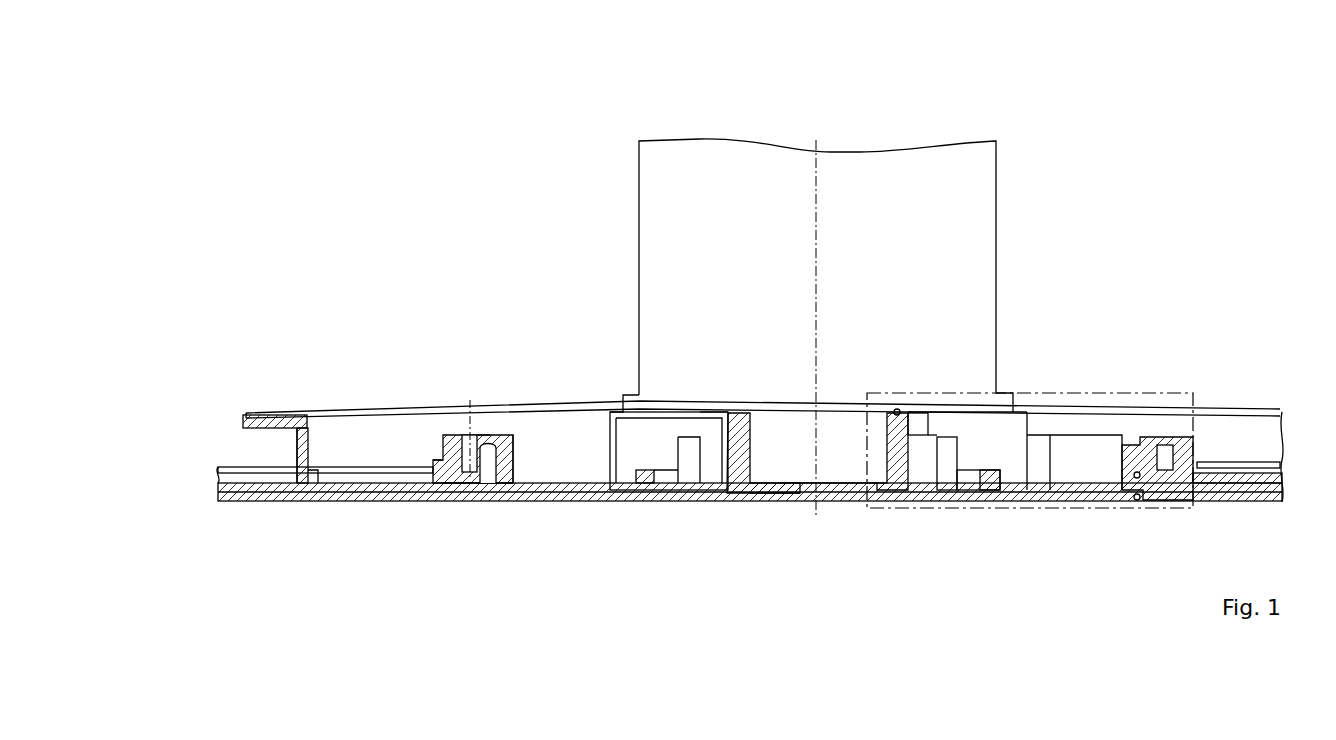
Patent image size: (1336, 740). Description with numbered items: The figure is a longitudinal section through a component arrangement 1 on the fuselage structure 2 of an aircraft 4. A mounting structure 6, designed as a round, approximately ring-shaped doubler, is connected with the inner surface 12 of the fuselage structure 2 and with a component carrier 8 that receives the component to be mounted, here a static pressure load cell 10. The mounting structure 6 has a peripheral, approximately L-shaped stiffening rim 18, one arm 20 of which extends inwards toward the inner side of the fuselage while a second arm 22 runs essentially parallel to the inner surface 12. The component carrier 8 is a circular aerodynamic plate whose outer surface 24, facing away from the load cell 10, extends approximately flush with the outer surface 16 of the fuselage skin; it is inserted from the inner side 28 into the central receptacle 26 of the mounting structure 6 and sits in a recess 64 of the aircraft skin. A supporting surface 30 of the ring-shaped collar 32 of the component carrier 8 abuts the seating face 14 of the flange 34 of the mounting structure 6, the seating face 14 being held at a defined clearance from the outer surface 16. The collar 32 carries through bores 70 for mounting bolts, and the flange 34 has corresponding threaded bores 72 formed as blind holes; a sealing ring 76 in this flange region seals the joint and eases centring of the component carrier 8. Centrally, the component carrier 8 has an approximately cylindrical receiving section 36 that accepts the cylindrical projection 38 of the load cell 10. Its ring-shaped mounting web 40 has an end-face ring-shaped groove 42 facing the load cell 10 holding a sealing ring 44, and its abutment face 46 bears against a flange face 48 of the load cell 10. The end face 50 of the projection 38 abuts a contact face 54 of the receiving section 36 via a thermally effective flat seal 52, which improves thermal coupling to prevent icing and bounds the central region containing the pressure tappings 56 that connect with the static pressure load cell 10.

The component arrangement 1 is at (338, 135).
The fuselage structure 2 is at (392, 499).
The aircraft 4 is at (504, 254).
The mounting structure 6 is at (350, 485).
The component carrier 8 is at (677, 499).
The static pressure load cell 10 is at (745, 226).
The inner surface 12 is at (425, 480).
The seating face 14 is at (488, 450).
The outer surface 16 is at (323, 506).
The stiffening rim 18 is at (254, 386).
The arm 20 is at (300, 447).
The second arm 22 is at (281, 418).
The outer surface 24 is at (565, 510).
The central receptacle 26 is at (1125, 443).
The inner side 28 is at (599, 384).
The supporting surface 30 is at (454, 445).
The ring-shaped collar 32 is at (483, 436).
The flange 34 is at (457, 478).
The receiving section 36 is at (768, 390).
The projection 38 is at (855, 458).
The mounting web 40 is at (905, 455).
The ring-shaped groove 42 is at (914, 404).
The sealing ring 44 is at (897, 412).
The abutment face 46 is at (743, 410).
The flange face 48 is at (700, 410).
The end face 50 is at (795, 486).
The flat seal 52 is at (762, 499).
The contact face 54 is at (876, 484).
The pressure tappings 56 is at (800, 499).
The recess 64 is at (1137, 500).
The through bores 70 is at (1153, 424).
The threaded bores 72 is at (1181, 450).
The sealing ring 76 is at (517, 436).